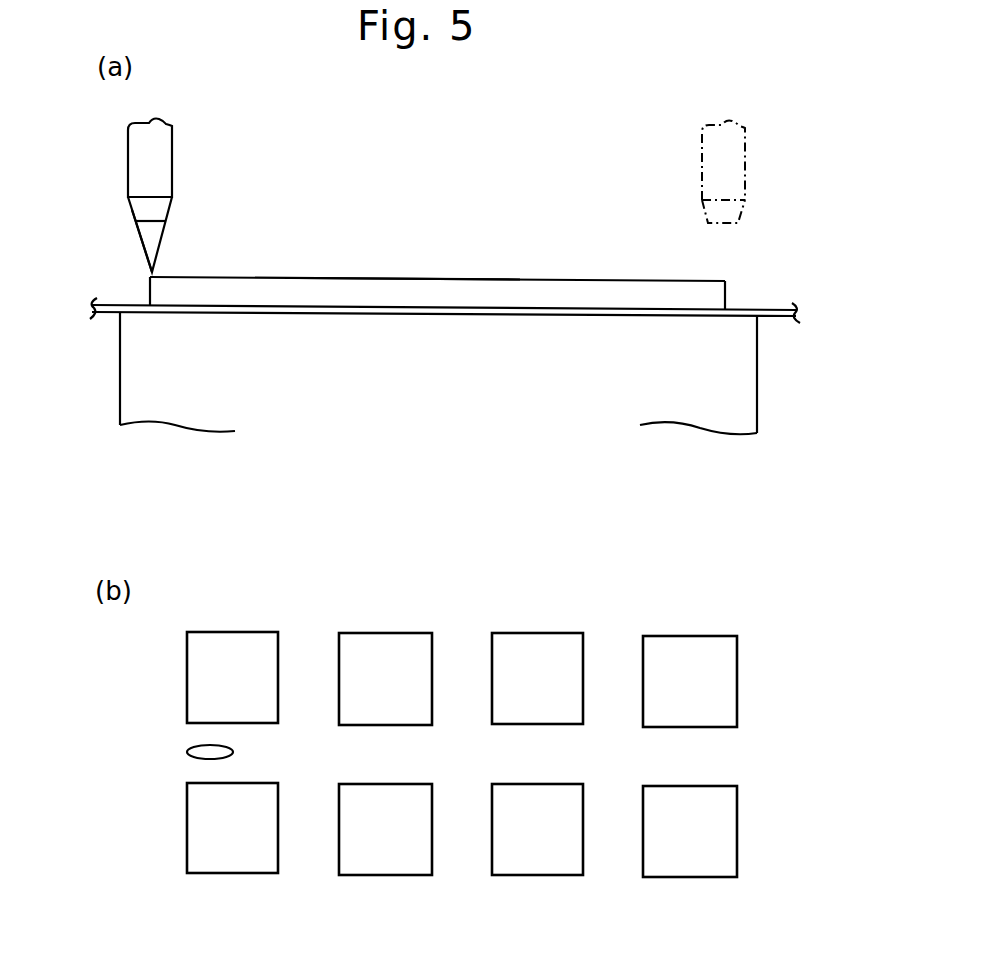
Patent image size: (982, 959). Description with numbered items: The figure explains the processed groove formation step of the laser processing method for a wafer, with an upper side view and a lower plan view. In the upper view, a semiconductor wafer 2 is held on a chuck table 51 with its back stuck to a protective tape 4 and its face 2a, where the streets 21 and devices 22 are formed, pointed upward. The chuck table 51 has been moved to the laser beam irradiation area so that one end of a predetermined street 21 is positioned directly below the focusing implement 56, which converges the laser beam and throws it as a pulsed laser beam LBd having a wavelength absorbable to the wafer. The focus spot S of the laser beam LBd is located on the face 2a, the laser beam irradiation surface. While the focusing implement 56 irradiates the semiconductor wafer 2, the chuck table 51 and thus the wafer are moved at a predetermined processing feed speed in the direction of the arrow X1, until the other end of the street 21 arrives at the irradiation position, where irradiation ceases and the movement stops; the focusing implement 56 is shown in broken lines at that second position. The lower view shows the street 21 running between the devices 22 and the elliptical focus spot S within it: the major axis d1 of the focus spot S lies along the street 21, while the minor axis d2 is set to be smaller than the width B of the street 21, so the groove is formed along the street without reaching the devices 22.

The focusing implement 56 is at (176, 152).
The protective tape 4 is at (92, 300).
The chuck table 51 is at (130, 381).
The semiconductor wafer 2 is at (630, 278).
The face 2a is at (515, 280).
The street 21 is at (744, 282).
The devices 22 is at (688, 643).
The pulsed laser beam LBd is at (142, 243).
The focus spot S is at (157, 272).
The processing feed direction arrow X1 is at (543, 462).
The width of the street B is at (384, 735).
The major axis d1 is at (263, 736).
The minor axis d2 is at (235, 745).